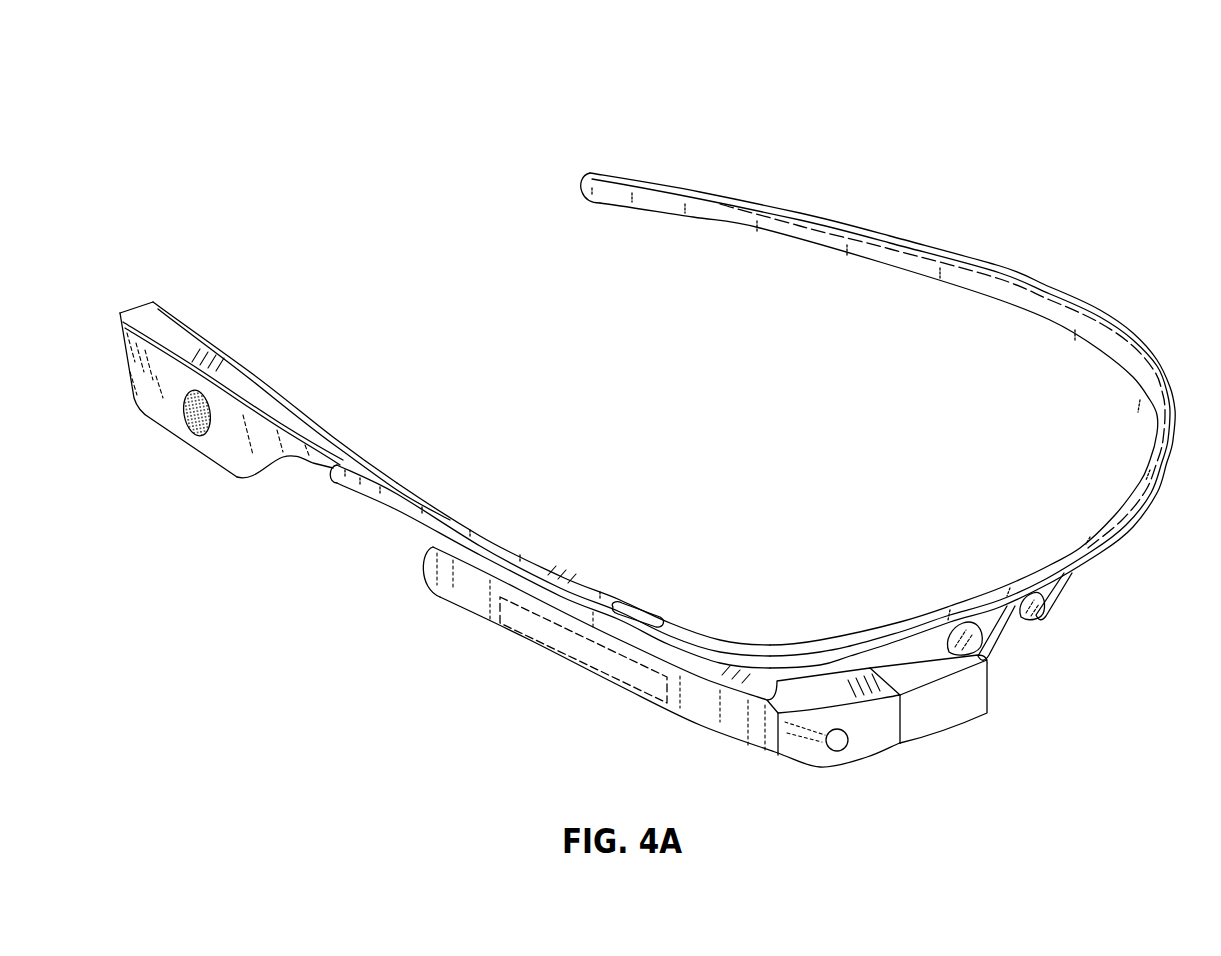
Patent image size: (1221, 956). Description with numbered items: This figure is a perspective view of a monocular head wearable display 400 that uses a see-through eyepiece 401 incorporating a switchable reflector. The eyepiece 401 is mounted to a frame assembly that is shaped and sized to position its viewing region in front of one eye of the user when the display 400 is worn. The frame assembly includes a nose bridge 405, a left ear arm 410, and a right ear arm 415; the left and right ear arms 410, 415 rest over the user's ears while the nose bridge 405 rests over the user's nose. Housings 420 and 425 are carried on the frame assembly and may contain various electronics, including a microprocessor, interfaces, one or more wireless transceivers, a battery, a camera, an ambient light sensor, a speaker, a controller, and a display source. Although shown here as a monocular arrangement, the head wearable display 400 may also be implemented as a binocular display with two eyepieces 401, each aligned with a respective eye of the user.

The head wearable display 400 is at (1063, 112).
The eyepiece 401 is at (956, 716).
The nose bridge 405 is at (1077, 650).
The left ear arm 410 is at (887, 237).
The right ear arm 415 is at (482, 533).
The housing 420 is at (690, 717).
The housing 425 is at (237, 463).